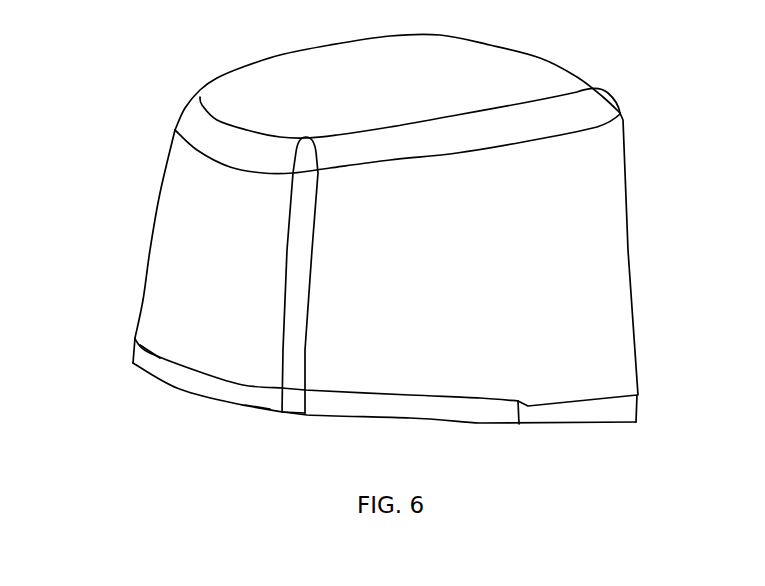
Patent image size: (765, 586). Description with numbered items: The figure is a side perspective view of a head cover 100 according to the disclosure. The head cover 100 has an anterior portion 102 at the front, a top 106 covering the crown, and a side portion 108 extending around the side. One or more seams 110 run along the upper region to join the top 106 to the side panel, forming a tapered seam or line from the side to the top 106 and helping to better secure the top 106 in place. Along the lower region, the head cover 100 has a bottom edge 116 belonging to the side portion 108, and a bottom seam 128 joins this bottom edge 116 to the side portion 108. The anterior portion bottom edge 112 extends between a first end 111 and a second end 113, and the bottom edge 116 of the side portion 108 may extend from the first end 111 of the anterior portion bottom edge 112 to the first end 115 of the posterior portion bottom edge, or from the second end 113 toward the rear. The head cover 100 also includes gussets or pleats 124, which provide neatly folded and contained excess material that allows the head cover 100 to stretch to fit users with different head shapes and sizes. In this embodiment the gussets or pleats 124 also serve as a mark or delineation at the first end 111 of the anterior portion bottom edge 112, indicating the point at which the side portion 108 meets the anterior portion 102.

The head cover 100 is at (238, 450).
The anterior portion 102 is at (182, 185).
The top 106 is at (530, 77).
The side portion 108 is at (526, 254).
The seam 110 is at (577, 92).
The first end of the anterior portion bottom edge 111 is at (283, 413).
The anterior portion bottom edge 112 is at (257, 410).
The second end of the anterior portion bottom edge 113 is at (135, 340).
The first end of the posterior portion bottom edge 115 is at (633, 418).
The bottom edge 116 is at (177, 390).
The gussets or pleats 124 is at (287, 377).
The bottom seam 128 is at (148, 350).